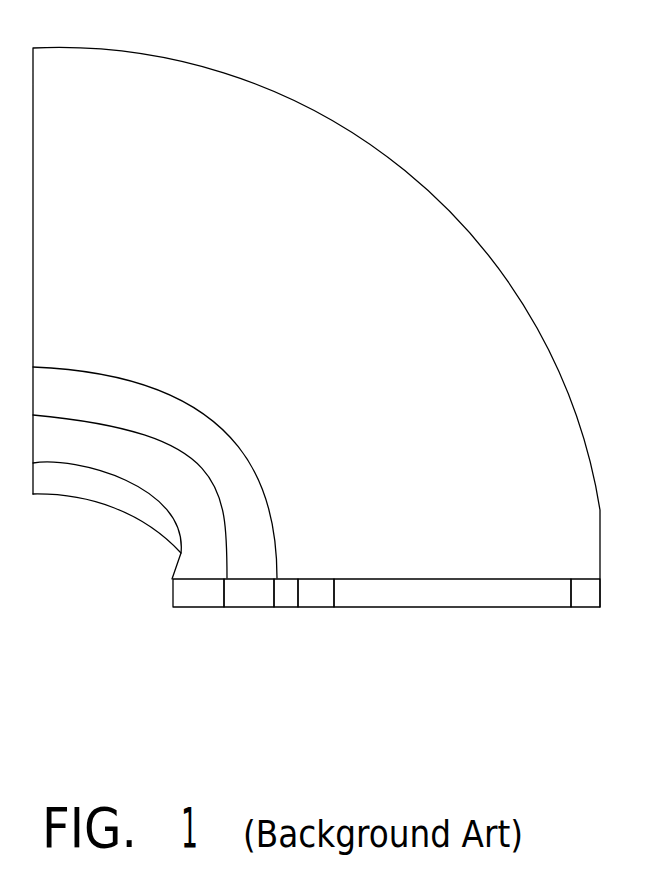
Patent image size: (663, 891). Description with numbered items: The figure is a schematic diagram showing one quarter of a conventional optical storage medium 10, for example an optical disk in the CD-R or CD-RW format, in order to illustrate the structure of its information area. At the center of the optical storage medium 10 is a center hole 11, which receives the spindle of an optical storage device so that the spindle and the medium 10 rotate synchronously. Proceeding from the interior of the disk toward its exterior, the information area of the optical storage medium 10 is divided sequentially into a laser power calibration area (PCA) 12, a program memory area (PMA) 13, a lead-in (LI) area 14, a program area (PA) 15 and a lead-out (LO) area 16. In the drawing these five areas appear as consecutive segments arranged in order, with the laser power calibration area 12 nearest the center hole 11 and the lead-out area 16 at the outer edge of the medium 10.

The optical storage medium 10 is at (510, 153).
The center hole 11 is at (84, 541).
The laser power calibration area (PCA) 12 is at (237, 595).
The program memory area (PMA) 13 is at (292, 595).
The lead-in (LI) area 14 is at (328, 595).
The program area (PA) 15 is at (466, 595).
The lead-out (LO) area 16 is at (585, 596).